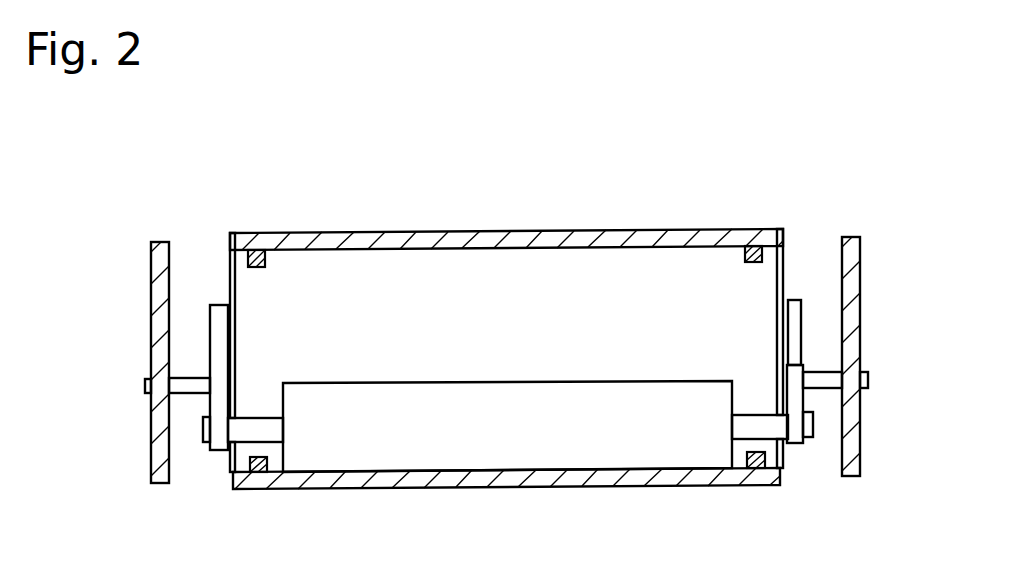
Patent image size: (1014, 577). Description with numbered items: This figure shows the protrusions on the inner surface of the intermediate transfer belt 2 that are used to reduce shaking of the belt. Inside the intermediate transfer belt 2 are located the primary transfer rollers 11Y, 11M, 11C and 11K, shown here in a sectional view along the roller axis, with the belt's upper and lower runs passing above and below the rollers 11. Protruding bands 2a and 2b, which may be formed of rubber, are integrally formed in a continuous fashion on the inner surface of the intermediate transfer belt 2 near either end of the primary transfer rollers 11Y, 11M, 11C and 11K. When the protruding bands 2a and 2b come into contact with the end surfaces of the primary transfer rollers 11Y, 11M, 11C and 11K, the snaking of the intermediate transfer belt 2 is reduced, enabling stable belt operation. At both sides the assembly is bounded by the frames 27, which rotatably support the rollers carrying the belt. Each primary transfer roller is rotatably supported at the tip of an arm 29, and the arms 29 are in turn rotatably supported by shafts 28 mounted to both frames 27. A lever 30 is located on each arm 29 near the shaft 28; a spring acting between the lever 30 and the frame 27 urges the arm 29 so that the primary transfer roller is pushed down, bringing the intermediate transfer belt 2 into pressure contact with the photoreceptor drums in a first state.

The intermediate transfer belt 2 is at (673, 478).
The protruding band 2a is at (238, 258).
The protruding band 2b is at (763, 251).
The photosensitive drum 11 is at (507, 390).
The primary transfer roller 11Y is at (507, 390).
The primary transfer roller 11M is at (507, 390).
The primary transfer roller 11C is at (507, 390).
The primary transfer roller 11K is at (508, 390).
The frame 27 is at (150, 279).
The shaft 28 is at (822, 371).
The arm 29 is at (797, 438).
The lever 30 is at (797, 300).